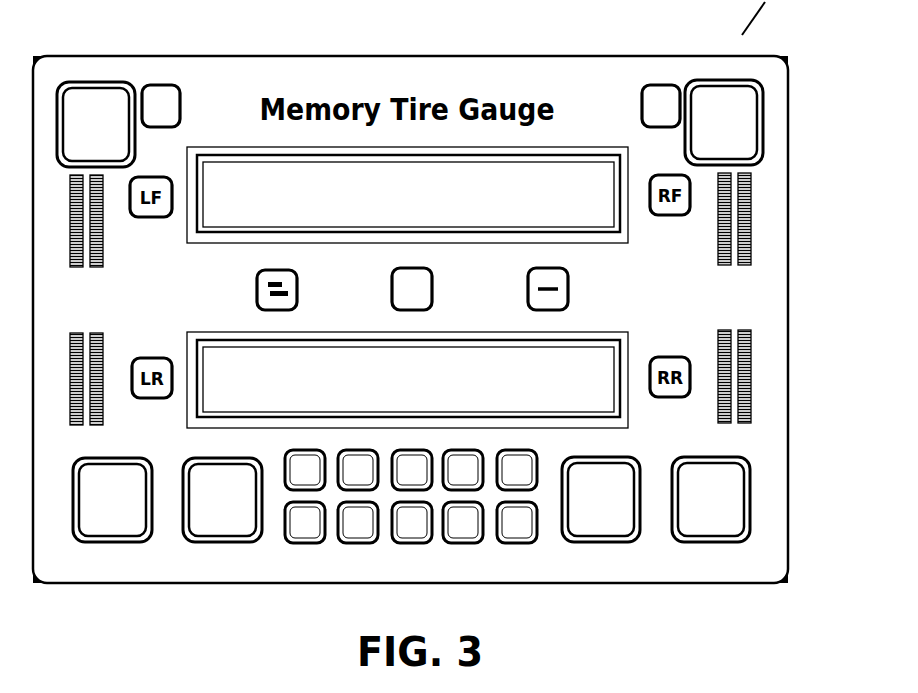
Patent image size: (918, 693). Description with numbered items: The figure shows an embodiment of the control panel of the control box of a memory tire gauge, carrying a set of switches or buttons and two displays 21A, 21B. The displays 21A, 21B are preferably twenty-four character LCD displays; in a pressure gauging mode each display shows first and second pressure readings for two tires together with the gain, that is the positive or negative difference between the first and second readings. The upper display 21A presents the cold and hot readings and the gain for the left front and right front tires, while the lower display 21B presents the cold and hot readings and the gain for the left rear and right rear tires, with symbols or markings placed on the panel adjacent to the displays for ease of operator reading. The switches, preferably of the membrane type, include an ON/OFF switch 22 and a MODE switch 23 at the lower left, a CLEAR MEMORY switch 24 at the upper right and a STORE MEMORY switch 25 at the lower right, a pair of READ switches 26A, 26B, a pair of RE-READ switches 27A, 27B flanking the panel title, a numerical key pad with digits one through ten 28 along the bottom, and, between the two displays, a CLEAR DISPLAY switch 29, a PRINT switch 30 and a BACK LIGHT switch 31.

The display 21A is at (640, 254).
The display 21B is at (170, 331).
The ON/OFF switch 22 is at (108, 525).
The MODE switch 23 is at (220, 525).
The CLEAR MEMORY switch 24 is at (745, 143).
The STORE MEMORY switch 25 is at (707, 525).
The READ switch 26A is at (95, 102).
The READ switch 26B is at (600, 525).
The RE-READ switch 27A is at (162, 90).
The RE-READ switch 27B is at (653, 88).
The numerical key pad digits 28 is at (483, 556).
The CLEAR DISPLAY switch 29 is at (257, 283).
The PRINT switch 30 is at (558, 289).
The BACK LIGHT switch 31 is at (412, 290).